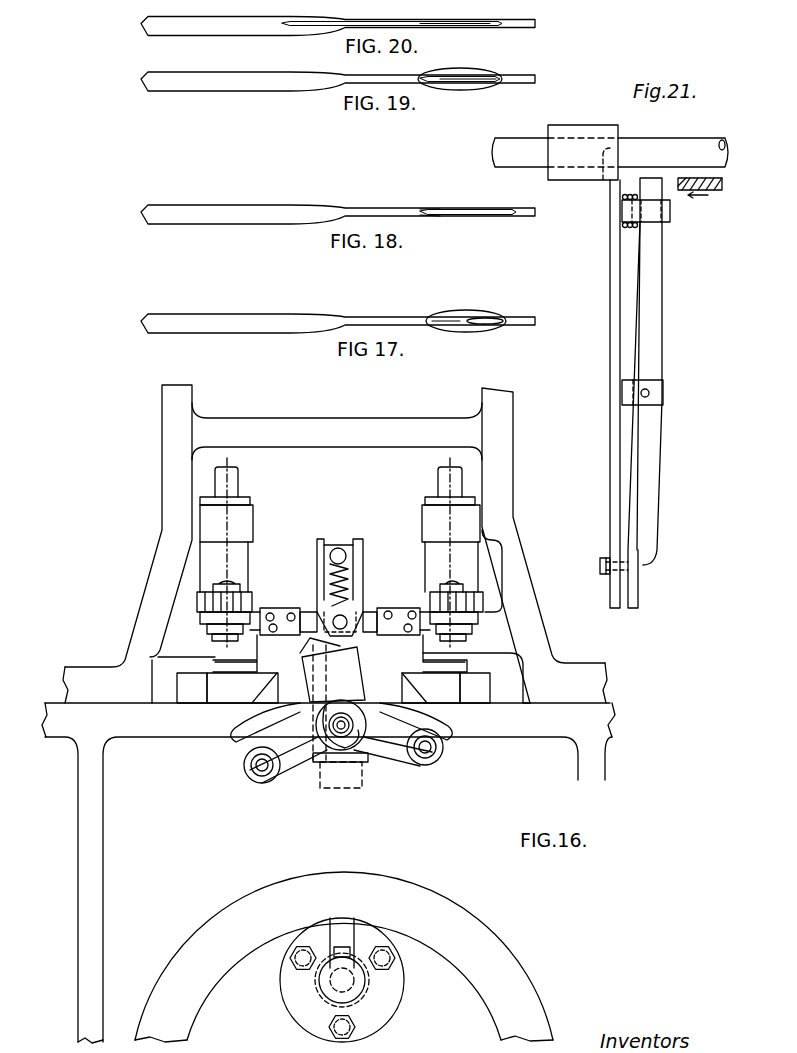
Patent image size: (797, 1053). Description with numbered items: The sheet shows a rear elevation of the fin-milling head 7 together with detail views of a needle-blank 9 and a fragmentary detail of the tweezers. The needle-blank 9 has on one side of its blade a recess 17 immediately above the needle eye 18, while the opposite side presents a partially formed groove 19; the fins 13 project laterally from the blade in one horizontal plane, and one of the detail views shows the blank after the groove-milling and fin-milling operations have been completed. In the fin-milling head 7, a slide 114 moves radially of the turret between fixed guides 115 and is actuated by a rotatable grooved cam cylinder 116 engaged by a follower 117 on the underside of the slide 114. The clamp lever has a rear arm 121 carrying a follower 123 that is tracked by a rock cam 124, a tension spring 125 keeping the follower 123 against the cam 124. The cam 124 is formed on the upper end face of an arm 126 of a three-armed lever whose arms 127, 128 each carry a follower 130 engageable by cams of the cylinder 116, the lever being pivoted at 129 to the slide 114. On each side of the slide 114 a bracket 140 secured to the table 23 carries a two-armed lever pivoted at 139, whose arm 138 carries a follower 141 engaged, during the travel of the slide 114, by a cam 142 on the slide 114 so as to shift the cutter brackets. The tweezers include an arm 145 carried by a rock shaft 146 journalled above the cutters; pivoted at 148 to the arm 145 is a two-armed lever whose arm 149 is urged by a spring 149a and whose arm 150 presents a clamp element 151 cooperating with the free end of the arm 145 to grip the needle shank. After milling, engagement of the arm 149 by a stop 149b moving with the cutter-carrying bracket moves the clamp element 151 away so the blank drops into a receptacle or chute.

In FIG. 20, the needle-blank 9 is at (348, 20).
In FIG. 19, the needle-blank 9 is at (348, 80).
In FIG. 18, the needle-blank 9 is at (342, 212).
In FIG. 17, the needle-blank 9 is at (340, 321).
In FIG. 19, the fins 13 is at (478, 72).
In FIG. 18, the fins 13 is at (505, 215).
In FIG. 17, the fins 13 is at (478, 314).
In FIG. 18, the recess 17 is at (454, 216).
In FIG. 17, the recess 17 is at (453, 325).
In FIG. 20, the needle eye 18 is at (484, 20).
In FIG. 19, the needle eye 18 is at (480, 84).
In FIG. 17, the needle eye 18 is at (486, 324).
In FIG. 20, the partially formed groove 19 is at (455, 20).
In FIG. 19, the partially formed groove 19 is at (458, 85).
In FIG. 18, the partially formed groove 19 is at (445, 210).
In FIG. 21, the rock shaft 146 is at (670, 148).
In FIG. 21, the arm 145 is at (612, 312).
In FIG. 21, the arm of two-armed lever 149 is at (660, 326).
In FIG. 21, the spring 149a is at (628, 228).
In FIG. 21, the stop 149b is at (712, 196).
In FIG. 21, the pivot 148 is at (650, 392).
In FIG. 21, the arm of two-armed lever 150 is at (645, 468).
In FIG. 21, the clamp element 151 is at (635, 580).
In FIG. 16, the bracket 140 is at (165, 504).
In FIG. 16, the fin-milling head 7 is at (549, 651).
In FIG. 16, the table 23 is at (328, 873).
In FIG. 16, the pivot 139 is at (232, 568).
In FIG. 16, the lever arm 138 is at (243, 590).
In FIG. 16, the follower 141 is at (339, 642).
In FIG. 16, the cam 142 is at (263, 614).
In FIG. 16, the fixed guides 115 is at (333, 688).
In FIG. 16, the rear arm of two-armed lever 121 is at (356, 551).
In FIG. 16, the tension spring 125 is at (352, 582).
In FIG. 16, the follower 123 is at (352, 640).
In FIG. 16, the slide 114 is at (372, 632).
In FIG. 16, the rock cam 124 is at (312, 650).
In FIG. 16, the arm of three-armed lever 126 is at (352, 680).
In FIG. 16, the pivot 129 is at (352, 738).
In FIG. 16, the lever arm 127 is at (300, 738).
In FIG. 16, the lever arm 128 is at (398, 727).
In FIG. 16, the follower 130 is at (246, 765).
In FIG. 16, the follower 117 is at (330, 762).
In FIG. 16, the grooved cam cylinder 116 is at (192, 845).